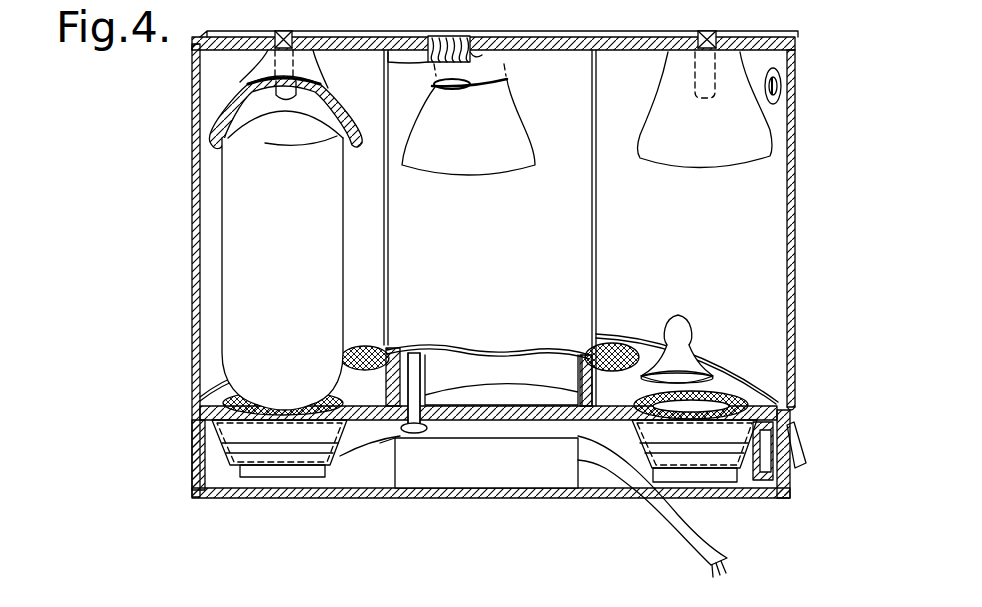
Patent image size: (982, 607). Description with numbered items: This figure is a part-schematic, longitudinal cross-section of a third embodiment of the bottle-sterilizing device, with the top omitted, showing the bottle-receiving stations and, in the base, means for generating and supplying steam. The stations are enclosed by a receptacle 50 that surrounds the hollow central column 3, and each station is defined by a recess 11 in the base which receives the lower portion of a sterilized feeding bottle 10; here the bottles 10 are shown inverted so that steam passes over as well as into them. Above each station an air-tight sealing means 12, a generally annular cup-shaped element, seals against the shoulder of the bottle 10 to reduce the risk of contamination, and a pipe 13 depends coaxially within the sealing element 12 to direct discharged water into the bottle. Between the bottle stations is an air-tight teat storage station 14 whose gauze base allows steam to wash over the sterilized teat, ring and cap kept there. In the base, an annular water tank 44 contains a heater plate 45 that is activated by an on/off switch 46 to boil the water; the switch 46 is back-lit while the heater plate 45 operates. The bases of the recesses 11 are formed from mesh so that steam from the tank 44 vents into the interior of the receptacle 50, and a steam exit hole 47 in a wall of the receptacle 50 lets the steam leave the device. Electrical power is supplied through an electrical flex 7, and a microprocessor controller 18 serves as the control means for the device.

The hollow central column 3 is at (565, 261).
The electrical flex 7 is at (715, 547).
The bottle 10 is at (300, 280).
The recess 11 is at (197, 408).
The air-tight sealing means 12 is at (428, 118).
The pipe 13 is at (707, 77).
The teat storage station 14 is at (690, 332).
The microprocessor controller 18 is at (506, 477).
The annular water tank 44 is at (340, 456).
The heater plate 45 is at (283, 472).
The on/off switch 46 is at (800, 455).
The steam exit hole 47 is at (781, 97).
The receptacle 50 is at (796, 222).